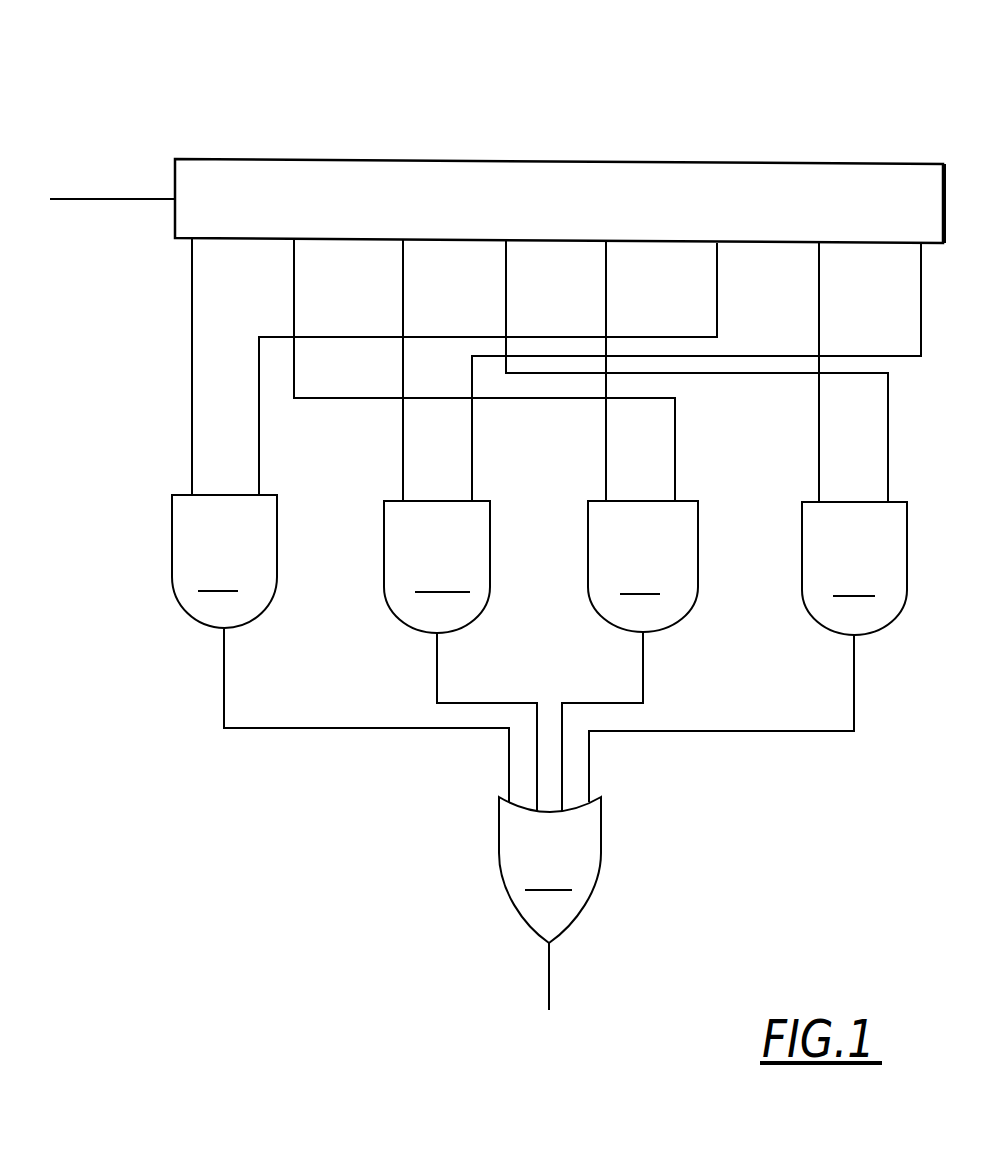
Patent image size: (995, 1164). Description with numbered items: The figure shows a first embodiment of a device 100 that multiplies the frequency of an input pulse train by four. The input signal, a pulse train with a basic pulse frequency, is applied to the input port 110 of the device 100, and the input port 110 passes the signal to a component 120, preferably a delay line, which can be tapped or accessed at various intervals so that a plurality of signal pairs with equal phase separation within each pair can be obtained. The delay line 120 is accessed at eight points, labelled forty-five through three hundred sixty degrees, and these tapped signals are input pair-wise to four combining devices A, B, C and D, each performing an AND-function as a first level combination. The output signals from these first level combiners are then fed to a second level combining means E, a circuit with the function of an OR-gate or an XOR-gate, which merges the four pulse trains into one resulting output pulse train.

The device 100 is at (726, 102).
The input port 110 is at (61, 202).
The delay line 120 is at (470, 160).